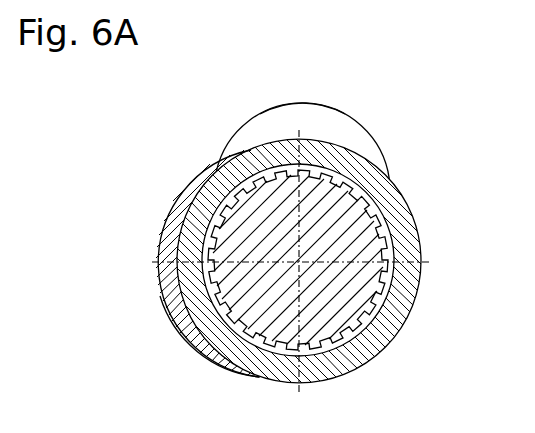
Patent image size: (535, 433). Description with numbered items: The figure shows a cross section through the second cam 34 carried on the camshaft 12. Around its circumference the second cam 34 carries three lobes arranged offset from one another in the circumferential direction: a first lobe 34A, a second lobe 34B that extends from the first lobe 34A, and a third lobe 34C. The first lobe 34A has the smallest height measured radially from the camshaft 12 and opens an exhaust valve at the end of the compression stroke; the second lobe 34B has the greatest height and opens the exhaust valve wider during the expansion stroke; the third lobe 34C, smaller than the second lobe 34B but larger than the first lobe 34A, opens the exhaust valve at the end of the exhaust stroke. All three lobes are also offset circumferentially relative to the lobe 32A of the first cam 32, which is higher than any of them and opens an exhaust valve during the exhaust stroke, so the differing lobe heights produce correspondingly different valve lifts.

The camshaft 12 is at (268, 218).
The first cam 32 is at (367, 136).
The lobe 32A is at (303, 103).
The second cam 34 is at (415, 237).
The first lobe 34A is at (207, 351).
The second lobe 34B is at (157, 280).
The third lobe 34C is at (392, 174).